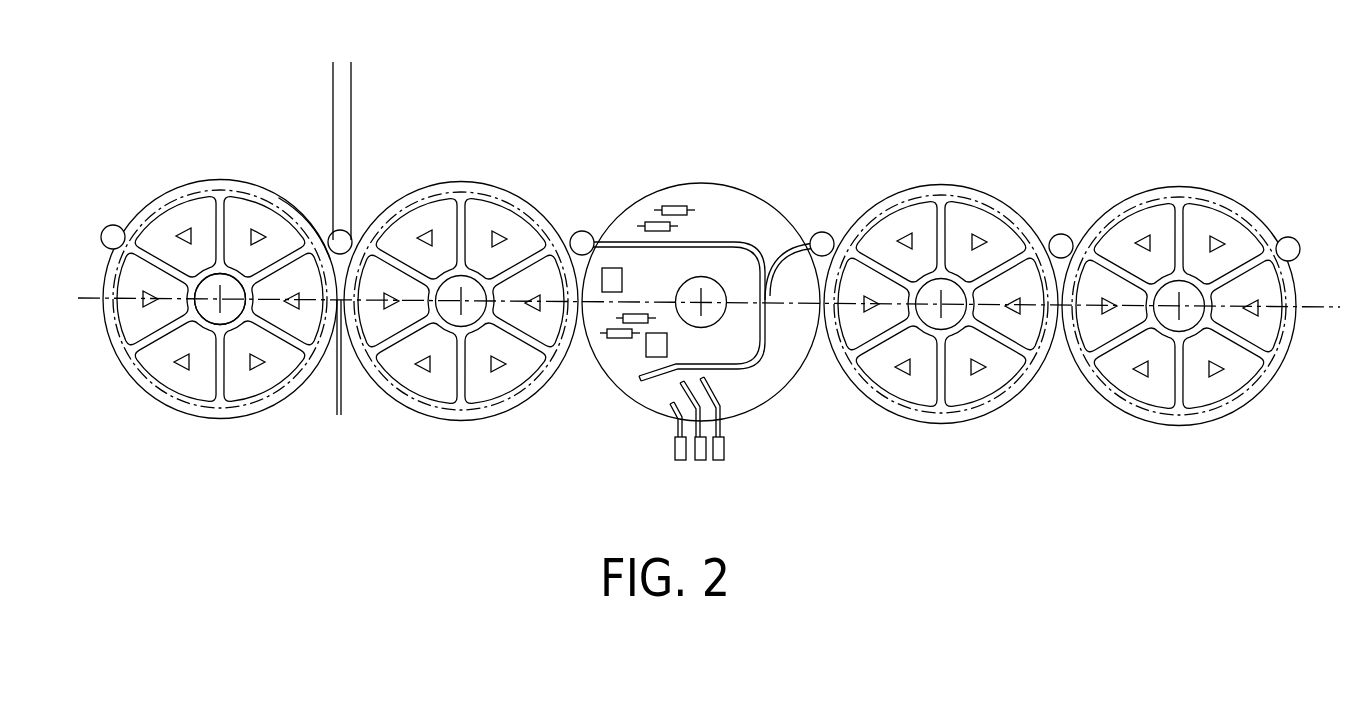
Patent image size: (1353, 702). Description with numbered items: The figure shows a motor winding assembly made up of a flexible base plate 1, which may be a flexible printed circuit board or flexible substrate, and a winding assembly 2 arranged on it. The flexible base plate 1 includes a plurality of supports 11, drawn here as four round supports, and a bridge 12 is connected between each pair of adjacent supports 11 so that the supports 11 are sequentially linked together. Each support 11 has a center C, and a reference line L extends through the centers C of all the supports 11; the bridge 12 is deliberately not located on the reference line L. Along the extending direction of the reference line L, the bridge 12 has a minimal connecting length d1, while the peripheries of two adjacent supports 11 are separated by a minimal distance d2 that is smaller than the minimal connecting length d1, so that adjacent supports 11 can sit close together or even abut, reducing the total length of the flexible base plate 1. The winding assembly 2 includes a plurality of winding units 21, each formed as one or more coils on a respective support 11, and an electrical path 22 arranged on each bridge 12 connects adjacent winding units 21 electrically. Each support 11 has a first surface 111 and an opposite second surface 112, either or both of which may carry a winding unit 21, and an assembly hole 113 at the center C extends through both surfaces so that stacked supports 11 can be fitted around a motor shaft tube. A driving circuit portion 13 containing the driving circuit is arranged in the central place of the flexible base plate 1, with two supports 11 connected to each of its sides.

The flexible base plate 1 is at (607, 98).
The winding assembly 2 is at (230, 114).
The support 11 is at (686, 294).
The bridge 12 is at (344, 230).
The driving circuit portion 13 is at (716, 190).
The winding unit 21 is at (263, 192).
The electrical path 22 is at (321, 226).
The first surface 111 is at (134, 380).
The second surface 112 is at (166, 402).
The assembly hole 113 is at (235, 313).
The center C is at (219, 302).
The reference line L is at (84, 292).
The minimal connecting length d1 is at (380, 70).
The minimal distance d2 is at (310, 408).